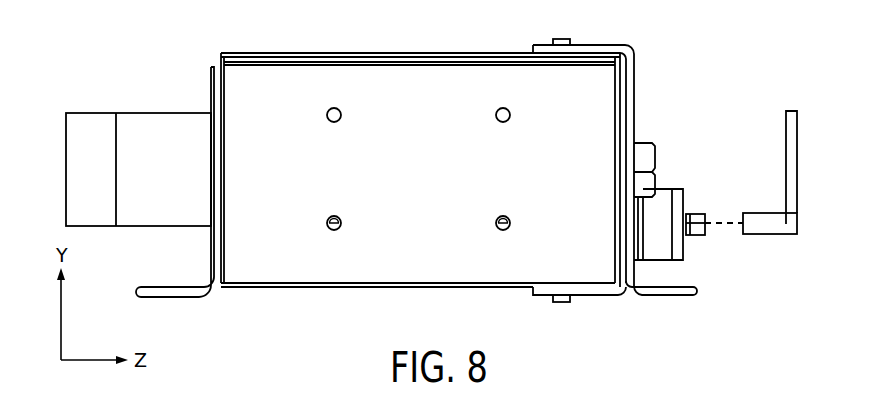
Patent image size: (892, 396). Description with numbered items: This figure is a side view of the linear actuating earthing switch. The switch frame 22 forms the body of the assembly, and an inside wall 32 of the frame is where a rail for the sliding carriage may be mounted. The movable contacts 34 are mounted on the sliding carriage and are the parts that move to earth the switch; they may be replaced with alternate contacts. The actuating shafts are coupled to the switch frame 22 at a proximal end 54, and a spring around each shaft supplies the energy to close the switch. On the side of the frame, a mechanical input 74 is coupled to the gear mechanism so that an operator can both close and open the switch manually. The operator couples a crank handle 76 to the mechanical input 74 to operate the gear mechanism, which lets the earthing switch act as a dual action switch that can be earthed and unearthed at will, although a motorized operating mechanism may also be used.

The switch frame 22 is at (593, 43).
The inside wall 32 is at (461, 52).
The movable contacts 34 is at (88, 125).
The proximal end 54 is at (645, 143).
The mechanical input 74 is at (697, 212).
The crank handle 76 is at (786, 147).